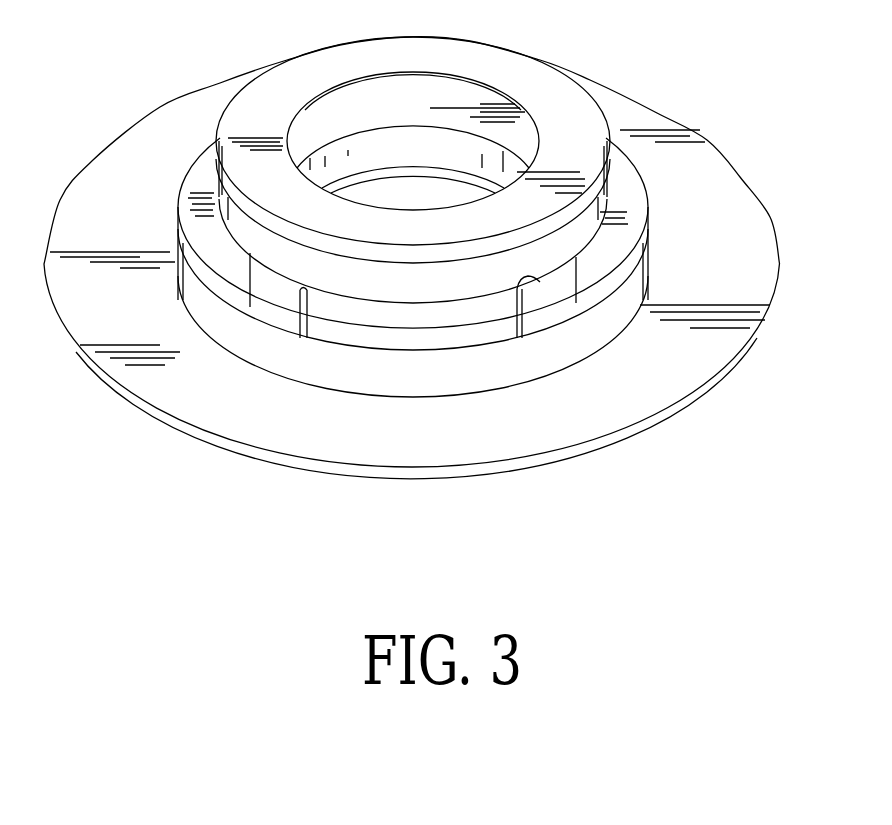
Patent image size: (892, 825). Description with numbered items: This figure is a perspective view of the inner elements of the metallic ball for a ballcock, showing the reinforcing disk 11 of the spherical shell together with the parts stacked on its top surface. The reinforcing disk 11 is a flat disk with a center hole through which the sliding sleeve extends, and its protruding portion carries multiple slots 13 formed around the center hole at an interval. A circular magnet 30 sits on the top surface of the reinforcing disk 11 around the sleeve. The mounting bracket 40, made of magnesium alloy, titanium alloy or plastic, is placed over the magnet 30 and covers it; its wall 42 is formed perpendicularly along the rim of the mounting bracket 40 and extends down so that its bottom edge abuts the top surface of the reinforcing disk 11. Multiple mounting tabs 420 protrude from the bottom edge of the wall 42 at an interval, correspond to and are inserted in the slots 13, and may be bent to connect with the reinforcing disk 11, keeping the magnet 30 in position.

The reinforcing disk 11 is at (742, 250).
The slots 13 is at (518, 288).
The magnet 30 is at (413, 105).
The mounting bracket 40 is at (517, 73).
The wall 42 is at (596, 212).
The mounting tabs 420 is at (307, 338).